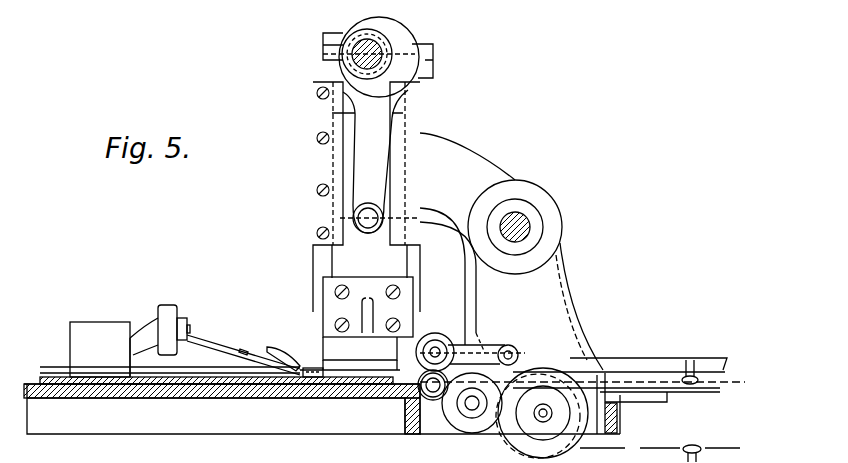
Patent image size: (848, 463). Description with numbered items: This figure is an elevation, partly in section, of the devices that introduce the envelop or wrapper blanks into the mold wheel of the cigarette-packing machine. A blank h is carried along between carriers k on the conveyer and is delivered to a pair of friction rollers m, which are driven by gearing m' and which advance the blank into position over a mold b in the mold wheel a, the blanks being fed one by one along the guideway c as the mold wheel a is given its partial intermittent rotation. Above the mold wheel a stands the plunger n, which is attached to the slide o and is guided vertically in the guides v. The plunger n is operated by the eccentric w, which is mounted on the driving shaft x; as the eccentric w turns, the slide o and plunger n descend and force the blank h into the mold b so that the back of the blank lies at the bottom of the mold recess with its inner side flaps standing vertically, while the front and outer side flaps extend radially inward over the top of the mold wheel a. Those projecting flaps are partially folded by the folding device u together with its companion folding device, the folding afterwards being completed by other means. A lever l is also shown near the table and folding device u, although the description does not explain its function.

The eccentric w is at (407, 37).
The driving shaft x is at (328, 53).
The guides v is at (338, 248).
The slide o is at (393, 262).
The plunger n is at (338, 347).
The blank h is at (343, 370).
The folding device u is at (313, 373).
The mold wheel a is at (170, 397).
The lever l is at (268, 348).
The mold b is at (333, 377).
The guideway c is at (457, 370).
The friction rollers m is at (470, 341).
The gearing m' is at (470, 418).
The carriers k is at (687, 363).